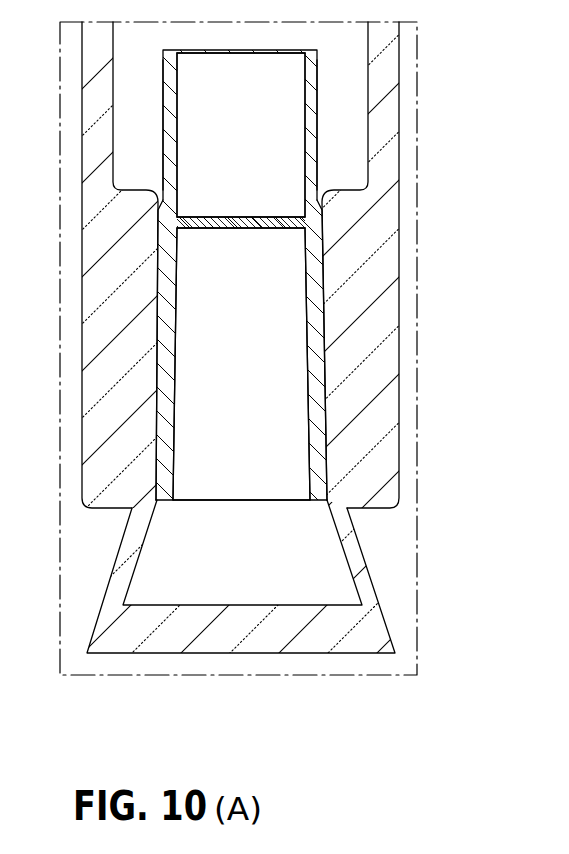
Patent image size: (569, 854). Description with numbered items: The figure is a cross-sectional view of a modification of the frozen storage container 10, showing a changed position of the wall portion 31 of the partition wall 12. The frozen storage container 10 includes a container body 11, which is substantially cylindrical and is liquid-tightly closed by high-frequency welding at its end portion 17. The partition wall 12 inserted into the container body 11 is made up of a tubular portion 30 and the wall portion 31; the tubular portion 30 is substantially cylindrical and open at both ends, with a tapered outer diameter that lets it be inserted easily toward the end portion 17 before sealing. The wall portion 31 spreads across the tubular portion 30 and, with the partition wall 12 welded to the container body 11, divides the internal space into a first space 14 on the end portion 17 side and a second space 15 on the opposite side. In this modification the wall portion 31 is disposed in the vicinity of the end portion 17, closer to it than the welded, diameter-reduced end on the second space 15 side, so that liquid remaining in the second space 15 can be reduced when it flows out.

The frozen storage container 10 is at (306, 340).
The container body 11 is at (406, 63).
The partition wall 12 is at (324, 100).
The first space 14 is at (251, 380).
The second space 15 is at (258, 145).
The end portion 17 is at (240, 655).
The tubular portion 30 is at (320, 147).
The wall portion 31 is at (240, 230).